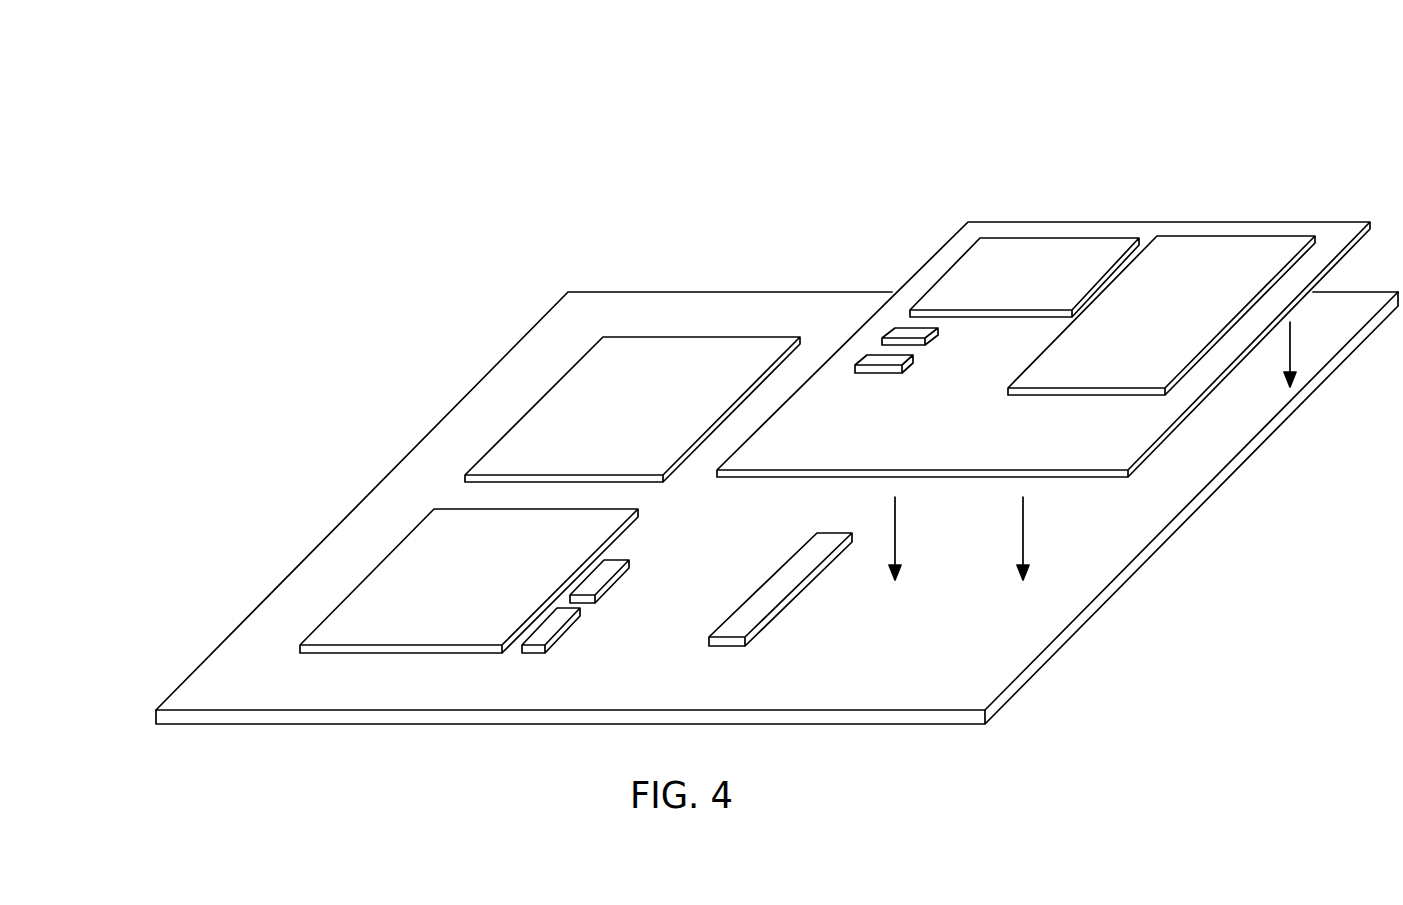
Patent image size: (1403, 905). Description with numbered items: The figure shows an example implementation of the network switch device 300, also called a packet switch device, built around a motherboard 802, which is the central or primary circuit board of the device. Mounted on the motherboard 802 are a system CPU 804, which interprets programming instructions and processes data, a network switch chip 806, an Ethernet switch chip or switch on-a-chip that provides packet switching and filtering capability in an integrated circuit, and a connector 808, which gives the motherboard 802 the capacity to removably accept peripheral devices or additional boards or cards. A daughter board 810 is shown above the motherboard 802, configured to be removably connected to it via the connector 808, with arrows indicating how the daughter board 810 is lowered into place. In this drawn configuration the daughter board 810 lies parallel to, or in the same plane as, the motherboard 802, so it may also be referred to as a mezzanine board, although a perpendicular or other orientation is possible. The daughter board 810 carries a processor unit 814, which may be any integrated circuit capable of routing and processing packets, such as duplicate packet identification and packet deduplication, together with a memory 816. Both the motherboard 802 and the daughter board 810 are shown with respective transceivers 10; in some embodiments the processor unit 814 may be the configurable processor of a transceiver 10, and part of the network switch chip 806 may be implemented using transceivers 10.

The network switch device 300 is at (1190, 127).
The motherboard 802 is at (590, 660).
The system CPU 804 is at (678, 337).
The network switch chip 806 is at (432, 509).
The connector 808 is at (807, 537).
The daughter board 810 is at (890, 425).
The processor unit 814 is at (1040, 238).
The memory 816 is at (1198, 236).
The transceiver 10 is at (578, 622).